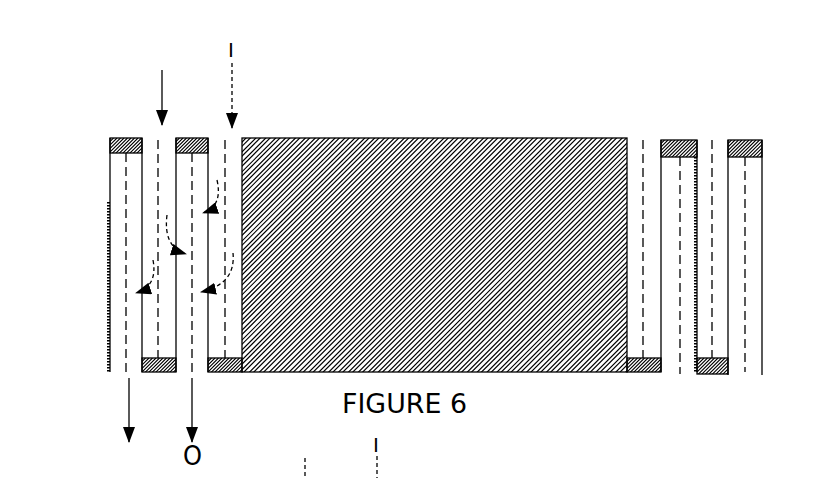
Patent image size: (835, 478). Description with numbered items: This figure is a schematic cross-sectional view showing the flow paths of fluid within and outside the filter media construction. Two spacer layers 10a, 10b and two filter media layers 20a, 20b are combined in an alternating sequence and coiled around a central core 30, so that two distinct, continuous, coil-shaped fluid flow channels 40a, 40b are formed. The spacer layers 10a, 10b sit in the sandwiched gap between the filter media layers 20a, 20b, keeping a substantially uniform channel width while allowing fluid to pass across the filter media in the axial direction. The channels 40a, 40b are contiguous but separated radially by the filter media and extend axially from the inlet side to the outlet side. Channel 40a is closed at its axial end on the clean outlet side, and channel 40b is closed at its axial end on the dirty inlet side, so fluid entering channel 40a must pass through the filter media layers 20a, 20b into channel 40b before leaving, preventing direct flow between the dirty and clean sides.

The spacer layer 10a is at (711, 187).
The spacer layer 10b is at (749, 257).
The filter media layer 20a is at (213, 170).
The filter media layer 20b is at (172, 200).
The core 30 is at (519, 182).
The fluid flow channel 40a is at (225, 132).
The fluid flow channel 40b is at (122, 374).